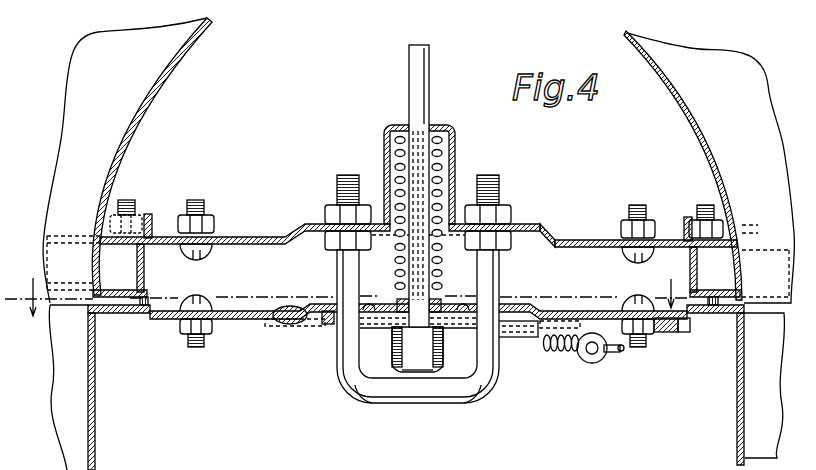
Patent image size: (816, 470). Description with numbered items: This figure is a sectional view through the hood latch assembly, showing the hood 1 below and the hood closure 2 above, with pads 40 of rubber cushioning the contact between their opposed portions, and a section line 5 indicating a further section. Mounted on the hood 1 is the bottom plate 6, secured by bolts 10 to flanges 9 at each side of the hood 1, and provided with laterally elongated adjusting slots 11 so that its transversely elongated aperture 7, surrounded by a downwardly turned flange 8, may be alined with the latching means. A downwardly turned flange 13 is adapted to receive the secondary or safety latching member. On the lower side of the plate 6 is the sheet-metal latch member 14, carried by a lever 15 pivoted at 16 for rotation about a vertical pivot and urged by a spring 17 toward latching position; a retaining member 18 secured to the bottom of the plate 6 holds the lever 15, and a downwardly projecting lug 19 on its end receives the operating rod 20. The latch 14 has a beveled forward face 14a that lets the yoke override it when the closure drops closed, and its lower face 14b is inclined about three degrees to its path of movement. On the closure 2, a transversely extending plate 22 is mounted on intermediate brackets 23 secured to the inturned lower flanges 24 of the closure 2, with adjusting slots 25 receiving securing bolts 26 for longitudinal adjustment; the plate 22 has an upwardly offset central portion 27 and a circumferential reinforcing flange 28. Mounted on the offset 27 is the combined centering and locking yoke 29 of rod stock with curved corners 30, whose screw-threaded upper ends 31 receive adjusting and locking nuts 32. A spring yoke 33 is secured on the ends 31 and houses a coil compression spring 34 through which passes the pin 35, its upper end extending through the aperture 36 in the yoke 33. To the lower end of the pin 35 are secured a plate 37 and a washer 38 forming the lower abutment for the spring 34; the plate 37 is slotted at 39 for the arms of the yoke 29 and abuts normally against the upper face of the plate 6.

The hood 1 is at (95, 438).
The hood closure 2 is at (166, 80).
The section line 5 is at (346, 287).
The bottom plate 6 is at (228, 311).
The transversely elongated aperture 7 is at (375, 328).
The downwardly turned flange 8 is at (328, 327).
The flanges 9 is at (135, 314).
The bolts 10 is at (192, 348).
The adjusting slots 11 is at (212, 314).
The downwardly turned flange 13 is at (661, 338).
The latch member 14 is at (417, 373).
The beveled forward face 14a is at (399, 358).
The lower face 14b is at (427, 381).
The lever 15 is at (317, 324).
The pivot 16 is at (285, 331).
The spring 17 is at (556, 353).
The retaining member 18 is at (520, 338).
The downwardly projecting lug 19 is at (597, 364).
The operating rod 20 is at (616, 353).
The transversely extending plate 22 is at (581, 239).
The intermediate brackets 23 is at (145, 268).
The inturned lower edges or flanges 24 is at (147, 291).
The adjusting slots 25 is at (107, 226).
The securing bolts 26 is at (127, 200).
The upwardly offset portion 27 is at (530, 232).
The circumferential reinforcing flange 28 is at (153, 221).
The combined centering and locking yoke 29 is at (340, 364).
The curved or beveled corners 30 is at (349, 394).
The screw-threaded upper ends 31 is at (344, 175).
The adjusting and locking nuts 32 is at (335, 211).
The spring yoke 33 is at (455, 131).
The coil compression spring 34 is at (396, 140).
The pin 35 is at (425, 78).
The aperture 36 is at (432, 127).
The plate 37 is at (442, 299).
The washer 38 is at (400, 299).
The slots 39 is at (366, 306).
The cushioning pads 40 is at (127, 302).